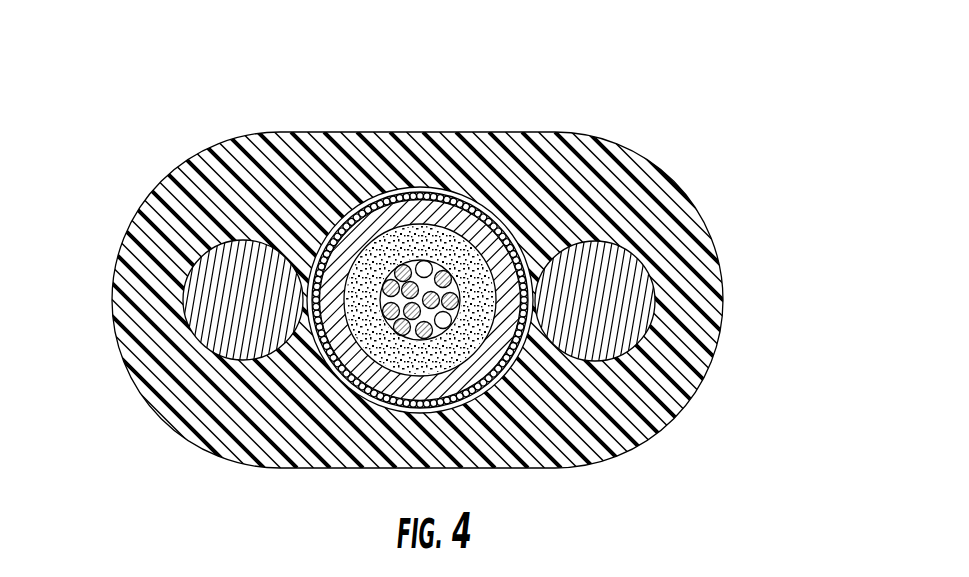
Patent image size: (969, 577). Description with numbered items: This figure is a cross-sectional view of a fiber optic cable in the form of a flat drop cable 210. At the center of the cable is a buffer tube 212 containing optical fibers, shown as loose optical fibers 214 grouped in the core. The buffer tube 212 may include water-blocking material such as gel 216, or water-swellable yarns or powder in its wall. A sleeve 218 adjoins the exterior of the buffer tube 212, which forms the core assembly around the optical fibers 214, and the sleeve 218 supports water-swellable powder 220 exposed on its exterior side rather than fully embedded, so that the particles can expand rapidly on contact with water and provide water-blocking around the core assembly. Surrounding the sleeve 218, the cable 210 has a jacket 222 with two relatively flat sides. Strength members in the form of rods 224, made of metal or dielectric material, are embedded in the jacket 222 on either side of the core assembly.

The flat drop cable 210 is at (484, 288).
The buffer tube 212 is at (543, 288).
The loose optical fibers 214 is at (433, 299).
The gel 216 is at (500, 372).
The sleeve 218 is at (459, 197).
The water-swellable powder 220 is at (416, 226).
The jacket 222 is at (560, 193).
The rods 224 is at (588, 335).